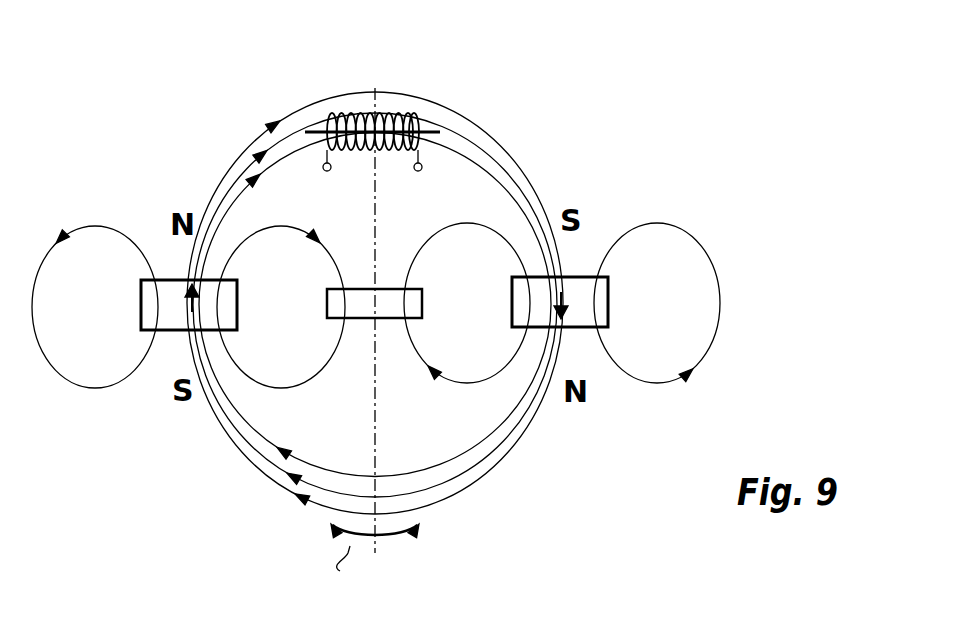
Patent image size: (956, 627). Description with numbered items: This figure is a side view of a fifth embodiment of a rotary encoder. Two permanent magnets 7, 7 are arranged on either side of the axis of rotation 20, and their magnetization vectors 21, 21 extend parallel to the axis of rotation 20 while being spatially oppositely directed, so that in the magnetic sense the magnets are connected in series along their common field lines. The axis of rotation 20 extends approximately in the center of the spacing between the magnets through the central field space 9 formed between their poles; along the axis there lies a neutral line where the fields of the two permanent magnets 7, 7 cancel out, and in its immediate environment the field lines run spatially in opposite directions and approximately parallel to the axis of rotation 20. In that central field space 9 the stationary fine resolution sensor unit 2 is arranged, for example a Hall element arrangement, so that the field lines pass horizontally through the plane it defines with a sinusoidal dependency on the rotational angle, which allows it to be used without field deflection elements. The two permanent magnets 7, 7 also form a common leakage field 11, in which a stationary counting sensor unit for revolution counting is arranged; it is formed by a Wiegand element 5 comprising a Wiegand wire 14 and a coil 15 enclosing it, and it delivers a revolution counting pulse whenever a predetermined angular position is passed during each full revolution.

The fine resolution sensor unit 2 is at (422, 303).
The Wiegand element 5 is at (360, 108).
The permanent magnet 7 is at (233, 305).
The central field space 9 is at (386, 320).
The common leakage field 11 is at (493, 136).
The Wiegand wire 14 is at (431, 134).
The coil 15 is at (418, 118).
The axis of rotation 20 is at (385, 535).
The magnetization vector 21 is at (188, 310).